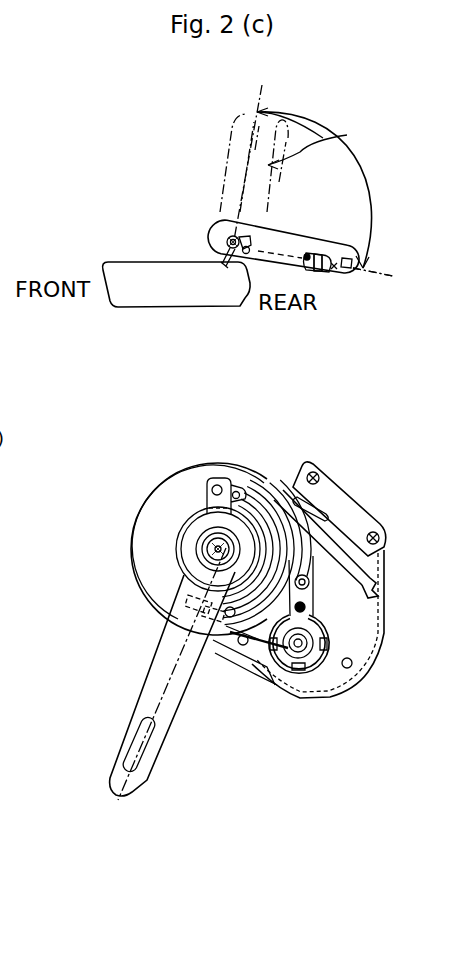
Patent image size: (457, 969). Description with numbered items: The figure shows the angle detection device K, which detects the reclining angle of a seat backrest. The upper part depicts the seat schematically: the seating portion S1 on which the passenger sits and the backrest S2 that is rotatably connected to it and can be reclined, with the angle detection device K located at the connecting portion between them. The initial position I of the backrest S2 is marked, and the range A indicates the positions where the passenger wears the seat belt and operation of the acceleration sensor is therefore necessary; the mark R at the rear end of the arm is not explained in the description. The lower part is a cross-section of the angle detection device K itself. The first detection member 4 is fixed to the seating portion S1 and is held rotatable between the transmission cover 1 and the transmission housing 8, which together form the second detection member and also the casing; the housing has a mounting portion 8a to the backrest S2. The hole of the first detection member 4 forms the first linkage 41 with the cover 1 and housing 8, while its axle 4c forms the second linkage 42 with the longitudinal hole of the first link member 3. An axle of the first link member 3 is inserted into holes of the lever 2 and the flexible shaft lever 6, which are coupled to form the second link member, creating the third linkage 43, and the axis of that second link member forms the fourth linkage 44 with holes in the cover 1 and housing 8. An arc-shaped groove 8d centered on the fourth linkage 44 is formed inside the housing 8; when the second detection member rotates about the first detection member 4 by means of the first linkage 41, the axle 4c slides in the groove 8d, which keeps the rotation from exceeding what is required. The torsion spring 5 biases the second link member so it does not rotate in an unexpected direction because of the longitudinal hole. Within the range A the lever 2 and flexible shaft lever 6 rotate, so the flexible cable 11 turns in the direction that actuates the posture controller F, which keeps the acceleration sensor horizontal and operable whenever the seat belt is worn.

The transmission cover 1 is at (273, 609).
The lever 2 is at (352, 680).
The first link member 3 is at (287, 489).
The first detection member 4 is at (194, 512).
The axle 4c is at (212, 442).
The torsion spring 5 is at (287, 688).
The flexible shaft lever 6 is at (352, 680).
The transmission housing 8 is at (359, 697).
The mounting portion 8a is at (353, 501).
The arc-shaped groove 8d is at (229, 645).
The flexible cable 11 is at (264, 258).
The first linkage 41 is at (216, 549).
The second linkage 42 is at (214, 480).
The third linkage 43 is at (310, 581).
The fourth linkage 44 is at (300, 612).
The angle detection device K is at (224, 245).
The seating portion S1 is at (100, 270).
The backrest S2 is at (316, 274).
The posture controller F is at (306, 256).
The rearward direction R is at (343, 275).
The range A is at (359, 177).
The initial position I is at (305, 138).